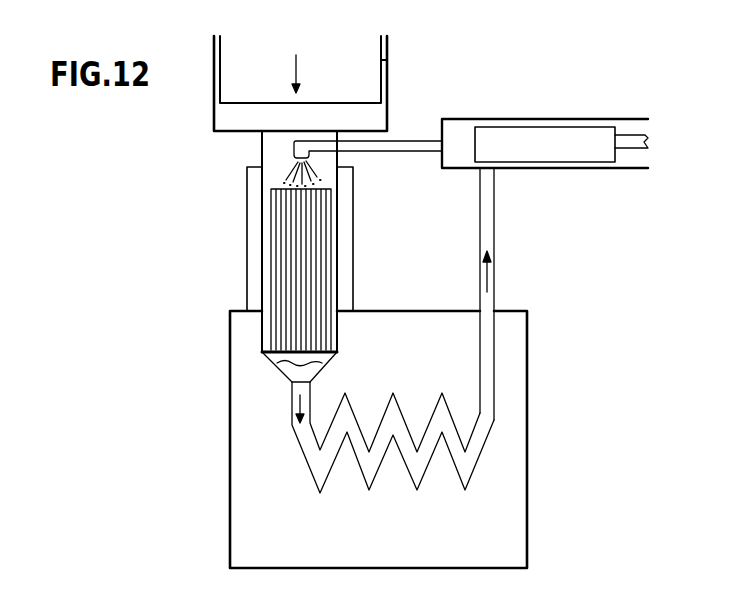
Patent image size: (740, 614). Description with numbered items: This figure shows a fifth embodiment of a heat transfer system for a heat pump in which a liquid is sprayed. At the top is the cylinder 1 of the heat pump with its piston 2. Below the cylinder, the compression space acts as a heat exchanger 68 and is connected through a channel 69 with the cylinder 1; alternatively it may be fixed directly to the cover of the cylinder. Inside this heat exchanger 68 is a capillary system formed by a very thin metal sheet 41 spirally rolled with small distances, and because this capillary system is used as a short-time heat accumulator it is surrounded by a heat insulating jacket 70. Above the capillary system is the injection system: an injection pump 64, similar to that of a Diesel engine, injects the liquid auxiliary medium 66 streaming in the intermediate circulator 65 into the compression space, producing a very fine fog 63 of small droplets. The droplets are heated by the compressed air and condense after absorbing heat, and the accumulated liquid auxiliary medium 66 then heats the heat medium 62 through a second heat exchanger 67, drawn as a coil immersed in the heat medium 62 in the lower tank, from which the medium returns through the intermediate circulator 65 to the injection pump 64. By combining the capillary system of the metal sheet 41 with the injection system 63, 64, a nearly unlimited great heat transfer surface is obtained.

The cylinder 1 is at (213, 112).
The piston 2 is at (368, 73).
The metal sheet 41 is at (280, 230).
The heat medium 62 is at (518, 492).
The fog 63 is at (318, 177).
The injection pump 64 is at (533, 133).
The intermediate circulator 65 is at (515, 371).
The liquid auxiliary medium 66 is at (490, 177).
The second heat exchanger 67 is at (372, 490).
The heat exchanger 68 is at (370, 252).
The channel 69 is at (262, 153).
The heat insulating jacket 70 is at (250, 268).